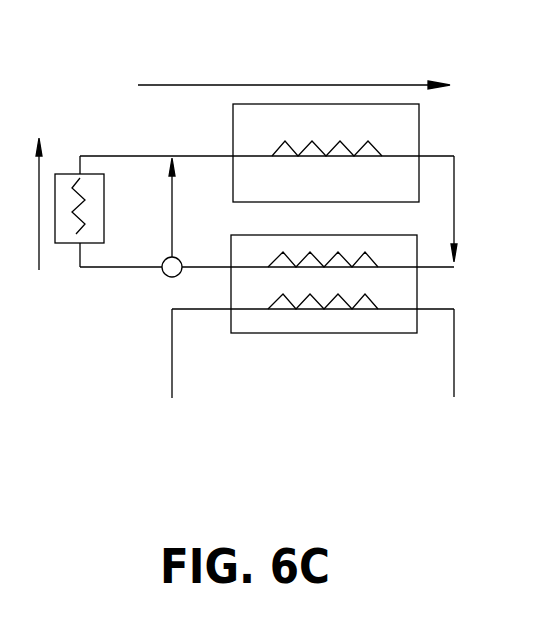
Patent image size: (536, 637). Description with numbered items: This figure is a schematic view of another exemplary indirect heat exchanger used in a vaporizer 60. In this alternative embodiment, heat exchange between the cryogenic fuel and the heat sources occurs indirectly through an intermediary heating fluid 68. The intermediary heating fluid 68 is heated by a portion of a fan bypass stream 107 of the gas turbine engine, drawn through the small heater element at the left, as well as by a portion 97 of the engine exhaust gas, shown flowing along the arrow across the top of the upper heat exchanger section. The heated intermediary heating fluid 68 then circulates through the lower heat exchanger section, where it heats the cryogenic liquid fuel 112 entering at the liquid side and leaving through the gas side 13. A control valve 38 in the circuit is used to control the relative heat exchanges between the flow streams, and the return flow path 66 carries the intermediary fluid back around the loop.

The portion of the engine exhaust gas 97 is at (371, 85).
The fan bypass stream 107 is at (40, 172).
The intermediary heating fluid 68 is at (452, 197).
The control valve 38 is at (178, 275).
The return flow path 66 is at (452, 287).
The gas outlet line 13 is at (454, 374).
The cryogenic liquid fuel 112 is at (173, 371).
The vaporizer 60 is at (305, 403).